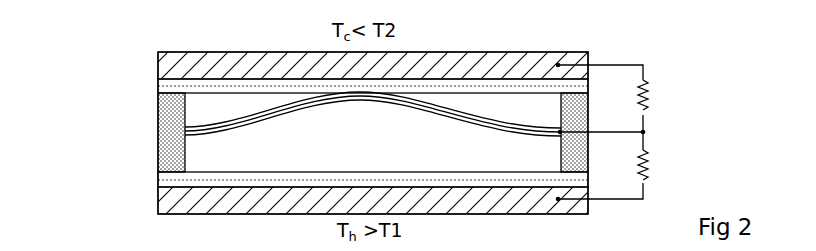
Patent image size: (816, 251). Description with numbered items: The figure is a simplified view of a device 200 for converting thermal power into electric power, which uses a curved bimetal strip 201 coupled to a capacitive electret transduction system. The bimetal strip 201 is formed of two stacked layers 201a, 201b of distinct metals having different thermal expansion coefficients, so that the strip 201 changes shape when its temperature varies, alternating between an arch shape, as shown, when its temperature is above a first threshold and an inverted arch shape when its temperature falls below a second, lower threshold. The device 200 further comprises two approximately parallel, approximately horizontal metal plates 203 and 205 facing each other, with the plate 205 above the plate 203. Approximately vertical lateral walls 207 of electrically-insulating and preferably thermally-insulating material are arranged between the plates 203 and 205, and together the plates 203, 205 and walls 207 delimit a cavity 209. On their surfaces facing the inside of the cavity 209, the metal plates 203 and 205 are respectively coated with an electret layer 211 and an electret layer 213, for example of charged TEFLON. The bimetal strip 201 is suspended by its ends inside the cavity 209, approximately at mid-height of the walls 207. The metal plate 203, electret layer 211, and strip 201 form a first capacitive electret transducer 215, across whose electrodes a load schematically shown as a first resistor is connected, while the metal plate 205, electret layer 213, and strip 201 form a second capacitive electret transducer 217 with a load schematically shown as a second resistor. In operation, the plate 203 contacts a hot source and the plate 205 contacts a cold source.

The device for converting thermal power into electric power 200 is at (150, 40).
The curved bimetal strip 201 is at (373, 130).
The stacked layer of bimetal strip 201a is at (235, 108).
The stacked layer of bimetal strip 201b is at (240, 148).
The metal plate 203 is at (175, 200).
The metal plate 205 is at (178, 60).
The lateral walls 207 is at (170, 151).
The cavity 209 is at (500, 107).
The electret layer 211 is at (175, 178).
The electret layer 213 is at (178, 86).
The first capacitive electret transducer 215 is at (595, 152).
The second capacitive electret transducer 217 is at (595, 110).